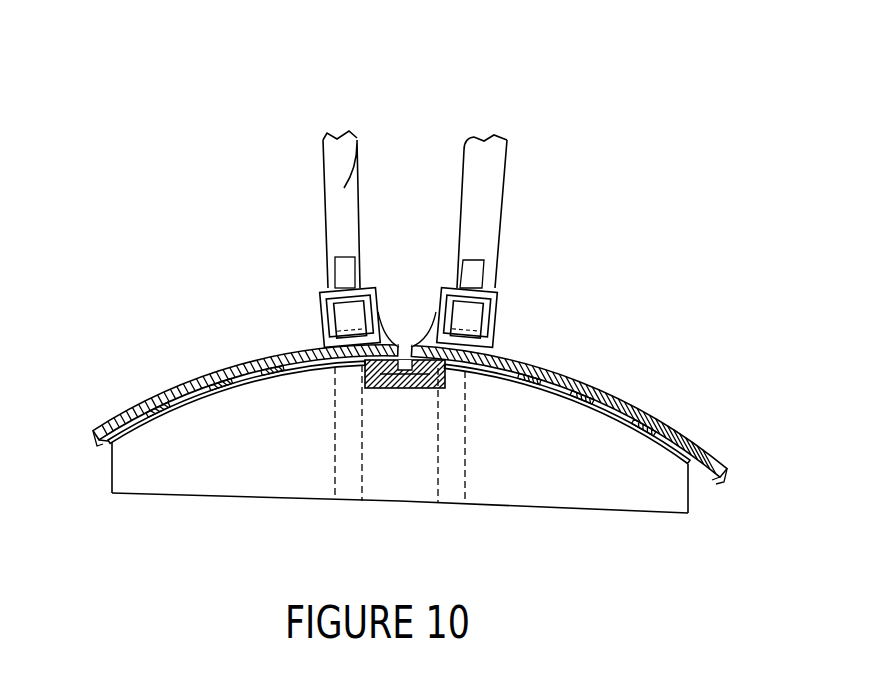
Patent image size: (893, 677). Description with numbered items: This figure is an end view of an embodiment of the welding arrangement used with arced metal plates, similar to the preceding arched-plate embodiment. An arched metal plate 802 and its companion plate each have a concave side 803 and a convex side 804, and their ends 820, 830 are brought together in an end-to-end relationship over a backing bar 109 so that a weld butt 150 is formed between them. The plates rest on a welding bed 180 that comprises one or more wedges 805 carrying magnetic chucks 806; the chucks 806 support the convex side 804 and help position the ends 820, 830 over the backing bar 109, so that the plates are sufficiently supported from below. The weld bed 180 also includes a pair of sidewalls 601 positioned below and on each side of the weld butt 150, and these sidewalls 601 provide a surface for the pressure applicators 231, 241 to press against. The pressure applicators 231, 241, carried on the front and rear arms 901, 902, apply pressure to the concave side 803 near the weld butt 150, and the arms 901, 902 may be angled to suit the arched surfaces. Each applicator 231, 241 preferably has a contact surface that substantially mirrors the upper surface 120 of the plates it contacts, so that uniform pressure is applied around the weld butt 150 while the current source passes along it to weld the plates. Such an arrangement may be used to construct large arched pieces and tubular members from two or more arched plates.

The backing bar 109 is at (397, 390).
The upper surface 120 is at (174, 350).
The weld butt 150 is at (408, 345).
The welding bed 180 is at (187, 455).
The pressure applicator 231 is at (522, 262).
The pressure applicator 241 is at (298, 255).
The sidewalls 601 is at (338, 500).
The arched metal plate 802 is at (104, 424).
The concave side 803 is at (112, 445).
The convex side 804 is at (117, 416).
The wedges 805 is at (152, 458).
The magnetic chucks 806 is at (582, 403).
The plate end 820 is at (322, 293).
The plate end 830 is at (492, 293).
The front arm 901 is at (357, 137).
The rear arm 902 is at (499, 156).